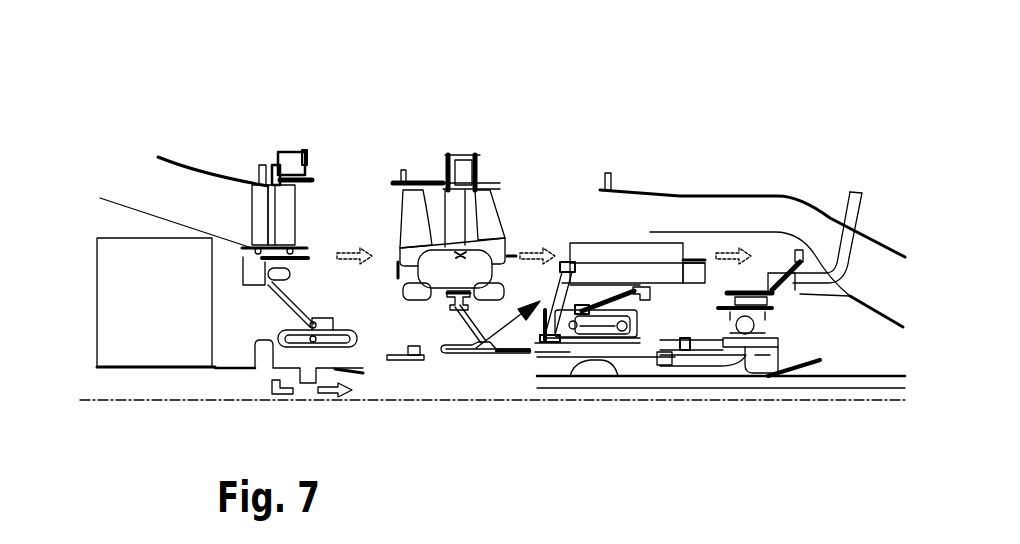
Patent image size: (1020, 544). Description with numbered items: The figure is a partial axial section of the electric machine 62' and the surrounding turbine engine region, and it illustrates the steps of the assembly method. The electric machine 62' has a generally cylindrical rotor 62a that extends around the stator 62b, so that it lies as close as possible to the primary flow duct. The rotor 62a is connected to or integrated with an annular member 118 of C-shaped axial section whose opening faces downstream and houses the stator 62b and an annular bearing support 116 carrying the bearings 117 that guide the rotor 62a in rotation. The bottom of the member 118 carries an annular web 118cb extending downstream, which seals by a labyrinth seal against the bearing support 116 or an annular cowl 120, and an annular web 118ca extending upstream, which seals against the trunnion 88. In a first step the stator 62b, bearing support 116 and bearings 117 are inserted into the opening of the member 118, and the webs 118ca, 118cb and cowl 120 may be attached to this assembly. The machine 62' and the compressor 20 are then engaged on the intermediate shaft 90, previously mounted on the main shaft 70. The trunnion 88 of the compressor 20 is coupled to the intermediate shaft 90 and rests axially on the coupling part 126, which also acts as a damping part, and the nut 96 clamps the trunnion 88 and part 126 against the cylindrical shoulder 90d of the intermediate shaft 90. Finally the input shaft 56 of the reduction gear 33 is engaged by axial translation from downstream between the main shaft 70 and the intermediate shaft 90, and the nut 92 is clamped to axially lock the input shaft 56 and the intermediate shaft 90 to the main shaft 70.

The compressor 20 is at (420, 156).
The reduction gear 33 is at (150, 370).
The input shaft 56 is at (235, 372).
The electric machine 62' is at (740, 191).
The rotor 62a is at (618, 250).
The stator 62b is at (662, 272).
The main shaft 70 is at (762, 388).
The trunnion 88 is at (487, 353).
The intermediate shaft 90 is at (654, 372).
The cylindrical shoulder 90d is at (772, 378).
The nut 92 is at (287, 395).
The nut 96 is at (396, 362).
The annular support 116 is at (647, 308).
The bearings 117 is at (612, 333).
The annular member 118 is at (470, 337).
The annular web 118ca is at (540, 352).
The annular web 118cb is at (540, 310).
The annular cowl 120 is at (597, 308).
The annular coupling part 126 is at (700, 357).